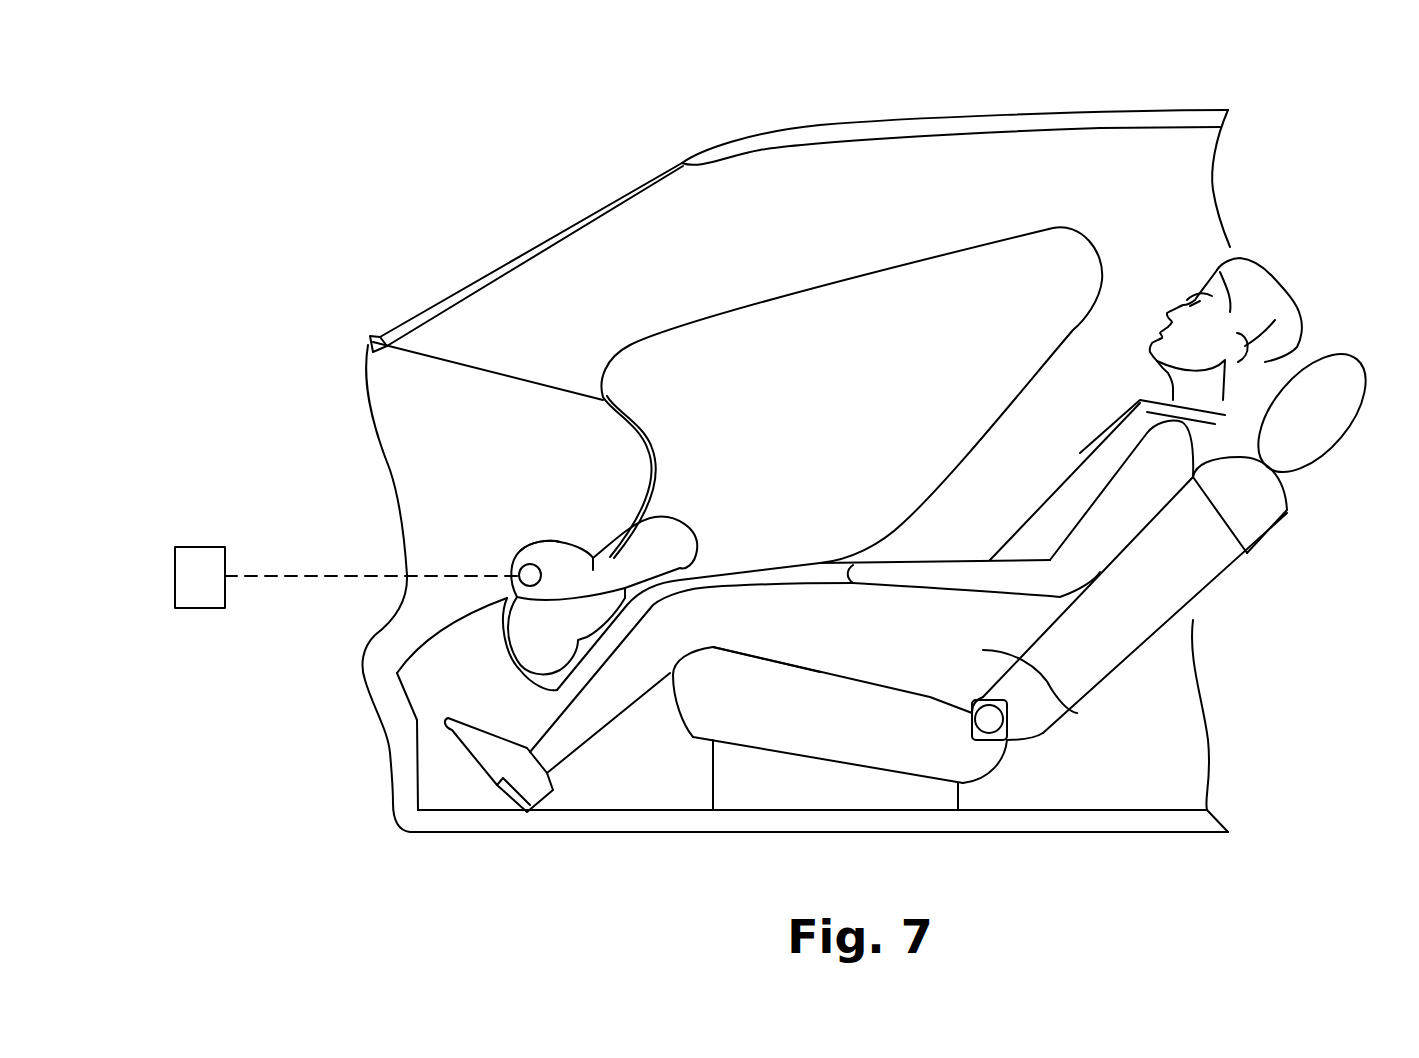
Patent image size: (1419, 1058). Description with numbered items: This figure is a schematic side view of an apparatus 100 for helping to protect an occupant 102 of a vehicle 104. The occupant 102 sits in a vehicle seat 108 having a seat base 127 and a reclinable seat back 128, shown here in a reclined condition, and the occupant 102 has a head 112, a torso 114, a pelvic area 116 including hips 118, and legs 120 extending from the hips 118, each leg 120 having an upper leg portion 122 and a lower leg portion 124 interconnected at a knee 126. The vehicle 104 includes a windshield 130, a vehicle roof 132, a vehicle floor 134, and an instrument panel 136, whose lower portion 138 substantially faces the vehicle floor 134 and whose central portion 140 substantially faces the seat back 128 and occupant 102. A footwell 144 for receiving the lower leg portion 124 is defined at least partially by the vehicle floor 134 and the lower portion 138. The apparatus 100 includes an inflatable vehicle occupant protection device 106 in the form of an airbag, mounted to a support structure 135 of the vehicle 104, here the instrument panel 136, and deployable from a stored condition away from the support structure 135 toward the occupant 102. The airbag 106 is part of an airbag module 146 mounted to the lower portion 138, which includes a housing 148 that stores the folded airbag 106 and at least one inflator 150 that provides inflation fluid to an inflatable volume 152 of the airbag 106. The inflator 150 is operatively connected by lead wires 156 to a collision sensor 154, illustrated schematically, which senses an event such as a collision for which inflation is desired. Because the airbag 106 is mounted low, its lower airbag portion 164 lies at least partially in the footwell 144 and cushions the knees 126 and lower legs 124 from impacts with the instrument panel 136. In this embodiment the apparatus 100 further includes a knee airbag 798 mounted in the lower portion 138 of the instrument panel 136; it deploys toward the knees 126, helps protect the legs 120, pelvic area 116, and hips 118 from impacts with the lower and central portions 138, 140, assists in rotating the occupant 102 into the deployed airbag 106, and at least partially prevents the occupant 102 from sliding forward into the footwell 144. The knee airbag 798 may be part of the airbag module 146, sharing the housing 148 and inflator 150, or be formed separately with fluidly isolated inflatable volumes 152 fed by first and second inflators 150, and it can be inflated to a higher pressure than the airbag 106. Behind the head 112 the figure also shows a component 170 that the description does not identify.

The apparatus 100 is at (1368, 127).
The occupant 102 is at (1283, 323).
The vehicle 104 is at (1212, 115).
The inflatable vehicle occupant protection device 106 is at (1060, 257).
The vehicle seat 108 is at (1002, 757).
The head 112 is at (1273, 303).
The torso 114 is at (1243, 550).
The pelvic area 116 is at (940, 647).
The hips 118 is at (1077, 713).
The legs 120 is at (822, 630).
The upper leg portion 122 is at (757, 623).
The lower leg portion 124 is at (623, 697).
The knee 126 is at (693, 627).
The seat base 127 is at (875, 720).
The reclinable seat back 128 is at (1290, 500).
The windshield 130 is at (570, 215).
The vehicle roof 132 is at (1167, 118).
The vehicle floor 134 is at (1215, 830).
The support structure 135 is at (303, 355).
The instrument panel 136 is at (387, 360).
The lower portion 138 is at (508, 596).
The central portion 140 is at (626, 478).
The footwell 144 is at (413, 756).
The airbag module 146 is at (527, 544).
The housing 148 is at (547, 545).
The inflator 150 is at (517, 570).
The inflatable volume 152 is at (868, 313).
The collision sensor 154 is at (160, 575).
The lead wires 156 is at (295, 572).
The lower airbag portion 164 is at (560, 692).
The headrest 170 is at (1333, 437).
The knee airbag 798 is at (537, 628).